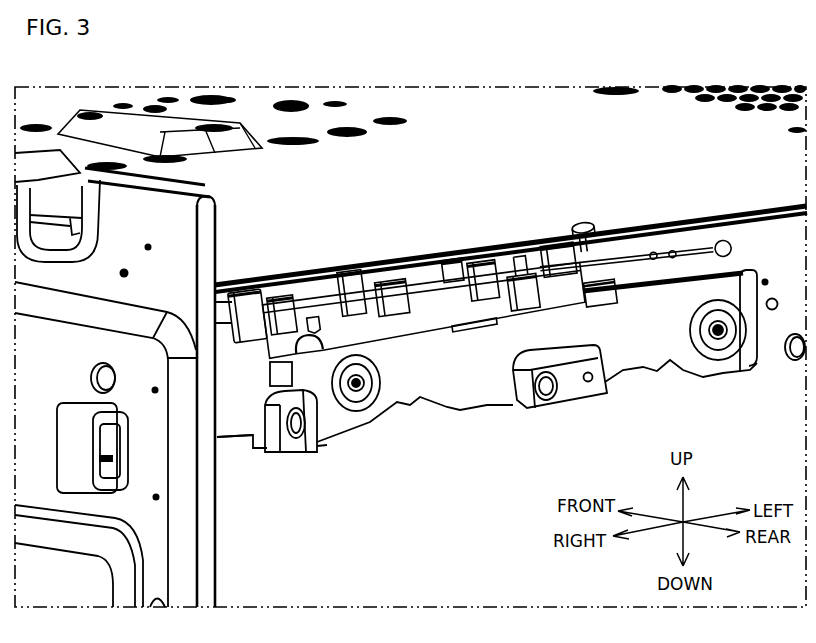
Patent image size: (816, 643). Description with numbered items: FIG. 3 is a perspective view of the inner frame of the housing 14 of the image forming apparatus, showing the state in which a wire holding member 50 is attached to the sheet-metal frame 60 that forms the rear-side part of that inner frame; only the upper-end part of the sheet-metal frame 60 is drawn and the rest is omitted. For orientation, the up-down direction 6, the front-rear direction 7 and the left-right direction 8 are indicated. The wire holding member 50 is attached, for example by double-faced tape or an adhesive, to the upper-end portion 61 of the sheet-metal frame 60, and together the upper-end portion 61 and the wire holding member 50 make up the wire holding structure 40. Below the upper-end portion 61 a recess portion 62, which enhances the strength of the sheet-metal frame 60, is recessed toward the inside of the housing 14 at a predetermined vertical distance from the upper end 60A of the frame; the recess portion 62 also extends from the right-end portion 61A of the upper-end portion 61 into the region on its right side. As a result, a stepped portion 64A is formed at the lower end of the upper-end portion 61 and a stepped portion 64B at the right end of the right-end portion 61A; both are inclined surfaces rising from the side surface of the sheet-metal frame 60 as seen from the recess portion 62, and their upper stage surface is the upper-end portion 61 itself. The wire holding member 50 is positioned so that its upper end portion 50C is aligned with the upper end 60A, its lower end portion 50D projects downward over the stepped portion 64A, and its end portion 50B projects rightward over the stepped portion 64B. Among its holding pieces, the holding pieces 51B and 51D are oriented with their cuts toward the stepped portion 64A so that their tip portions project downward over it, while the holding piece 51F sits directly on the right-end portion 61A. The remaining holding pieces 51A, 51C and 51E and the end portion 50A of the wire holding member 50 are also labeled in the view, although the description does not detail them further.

The housing 14 is at (527, 104).
The wire holding structure 40 is at (401, 368).
The wire holding member 50 is at (603, 253).
The first end portion of guide member 50A is at (582, 297).
The end portion 50B is at (253, 300).
The upper end portion 50C is at (402, 265).
The lower end portion 50D is at (477, 320).
The engaging claw 51A is at (570, 257).
The holding piece 51B is at (520, 255).
The engaging claw 51C is at (483, 248).
The holding piece 51D is at (400, 267).
The engaging claw 51E is at (350, 265).
The holding piece 51F is at (285, 298).
The sheet-metal frame 60 is at (760, 367).
The upper end 60A is at (727, 213).
The upper-end portion 61 is at (663, 243).
The right-end portion 61A is at (270, 452).
The recess portion 62 is at (500, 400).
The stepped portion 64A is at (613, 290).
The stepped portion 64B is at (235, 345).
The up-down direction 6 is at (677, 507).
The front-rear direction 7 is at (703, 530).
The left-right direction 8 is at (707, 517).